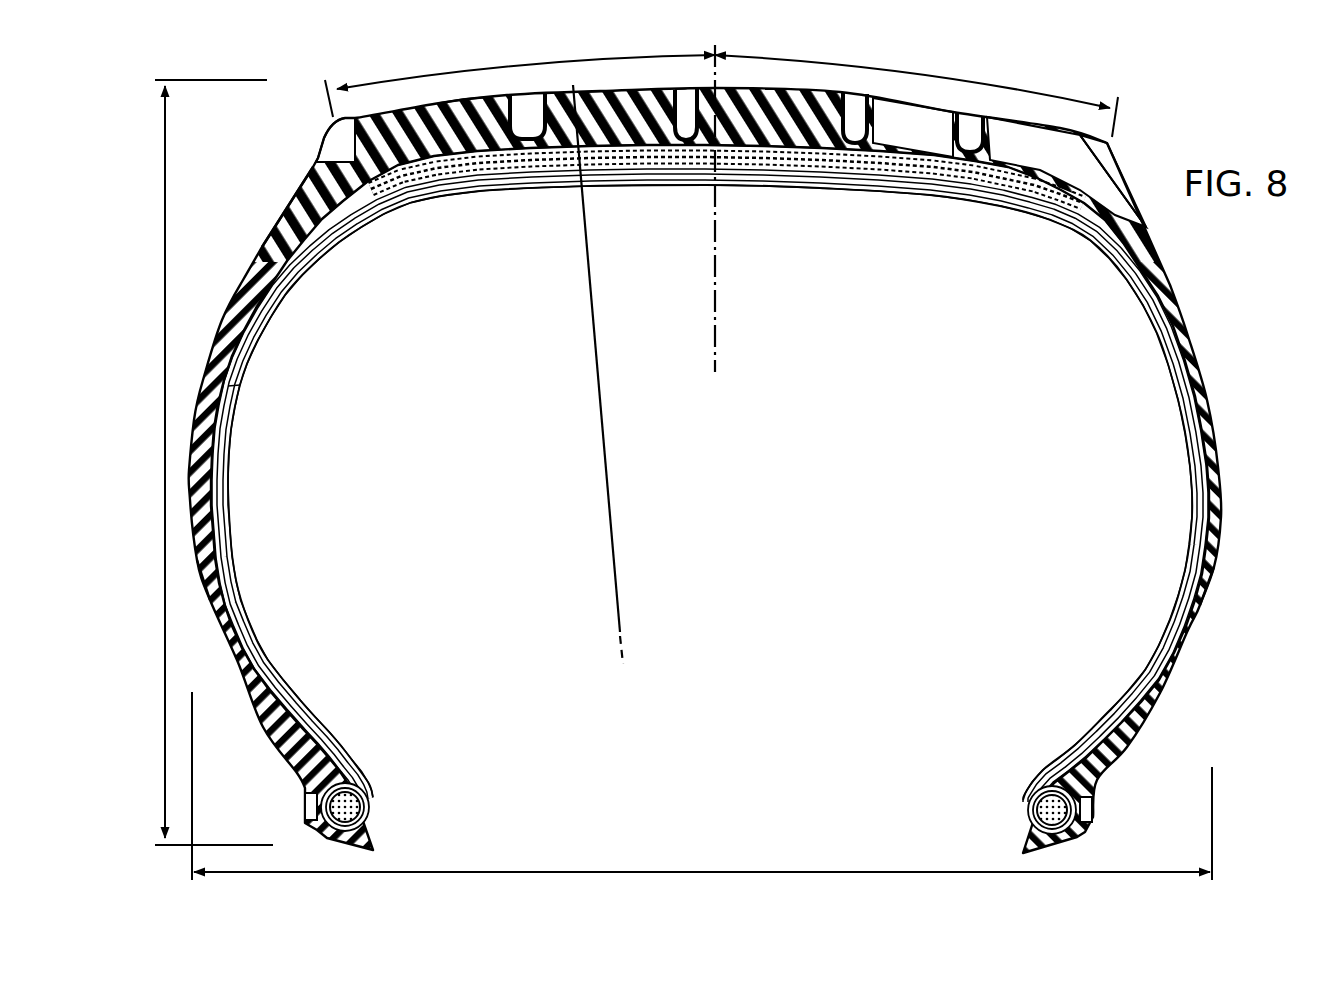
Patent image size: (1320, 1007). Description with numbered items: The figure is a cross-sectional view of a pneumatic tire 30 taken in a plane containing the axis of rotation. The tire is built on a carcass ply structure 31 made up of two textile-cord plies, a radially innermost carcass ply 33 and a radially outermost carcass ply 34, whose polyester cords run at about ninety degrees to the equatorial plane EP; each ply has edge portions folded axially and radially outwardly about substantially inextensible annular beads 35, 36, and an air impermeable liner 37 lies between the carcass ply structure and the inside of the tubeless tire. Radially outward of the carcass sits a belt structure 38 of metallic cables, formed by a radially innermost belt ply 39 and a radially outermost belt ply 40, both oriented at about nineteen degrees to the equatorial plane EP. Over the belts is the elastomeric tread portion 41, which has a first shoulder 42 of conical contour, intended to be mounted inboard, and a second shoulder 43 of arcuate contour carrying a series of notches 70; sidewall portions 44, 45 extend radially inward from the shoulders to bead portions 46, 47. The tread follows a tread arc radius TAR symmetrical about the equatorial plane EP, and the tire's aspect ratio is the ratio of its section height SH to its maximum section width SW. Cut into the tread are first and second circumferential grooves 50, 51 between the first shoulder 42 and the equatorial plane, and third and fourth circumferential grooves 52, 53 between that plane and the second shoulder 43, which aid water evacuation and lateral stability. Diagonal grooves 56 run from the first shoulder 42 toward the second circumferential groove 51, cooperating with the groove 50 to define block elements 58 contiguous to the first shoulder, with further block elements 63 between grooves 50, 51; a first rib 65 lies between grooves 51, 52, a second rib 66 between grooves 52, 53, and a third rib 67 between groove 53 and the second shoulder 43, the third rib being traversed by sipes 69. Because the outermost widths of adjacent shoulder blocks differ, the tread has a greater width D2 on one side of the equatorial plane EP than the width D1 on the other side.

The pneumatic tire 30 is at (1192, 109).
The carcass ply structure 31 is at (246, 387).
The radially innermost carcass ply 33 is at (277, 313).
The radially outermost carcass ply 34 is at (292, 290).
The annular bead 35 is at (368, 798).
The annular bead 36 is at (1030, 811).
The liner 37 is at (232, 493).
The belt structure 38 is at (648, 165).
The radially innermost belt ply 39 is at (481, 191).
The radially outermost belt ply 40 is at (526, 183).
The tread portion 41 is at (403, 101).
The first shoulder 42 is at (1108, 141).
The second shoulder 43 is at (330, 122).
The sidewall portion 44 is at (203, 567).
The sidewall portion 45 is at (1213, 568).
The bead portion 46 is at (305, 807).
The bead portion 47 is at (1092, 808).
The first circumferential groove 50 is at (968, 140).
The second circumferential groove 51 is at (845, 130).
The third circumferential groove 52 is at (684, 130).
The fourth circumferential groove 53 is at (533, 130).
The diagonal groove 56 is at (1068, 177).
The block element 58 is at (1047, 133).
The block element 63 is at (924, 110).
The first circumferentially extending rib 65 is at (777, 92).
The second circumferentially extending rib 66 is at (597, 92).
The third circumferentially extending rib 67 is at (452, 108).
The sipe 69 is at (466, 108).
The notch 70 is at (313, 164).
The tread width on one side of the equatorial plane D1 is at (335, 88).
The tread width on other side of the equatorial plane D2 is at (985, 84).
The equatorial plane EP is at (717, 336).
The tread arc radius TAR is at (607, 481).
The section height SH is at (170, 320).
The maximum section width SW is at (652, 872).